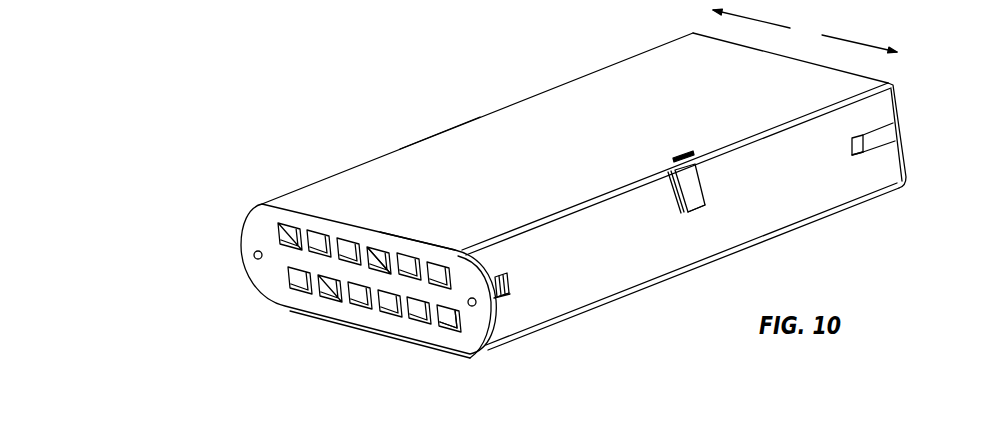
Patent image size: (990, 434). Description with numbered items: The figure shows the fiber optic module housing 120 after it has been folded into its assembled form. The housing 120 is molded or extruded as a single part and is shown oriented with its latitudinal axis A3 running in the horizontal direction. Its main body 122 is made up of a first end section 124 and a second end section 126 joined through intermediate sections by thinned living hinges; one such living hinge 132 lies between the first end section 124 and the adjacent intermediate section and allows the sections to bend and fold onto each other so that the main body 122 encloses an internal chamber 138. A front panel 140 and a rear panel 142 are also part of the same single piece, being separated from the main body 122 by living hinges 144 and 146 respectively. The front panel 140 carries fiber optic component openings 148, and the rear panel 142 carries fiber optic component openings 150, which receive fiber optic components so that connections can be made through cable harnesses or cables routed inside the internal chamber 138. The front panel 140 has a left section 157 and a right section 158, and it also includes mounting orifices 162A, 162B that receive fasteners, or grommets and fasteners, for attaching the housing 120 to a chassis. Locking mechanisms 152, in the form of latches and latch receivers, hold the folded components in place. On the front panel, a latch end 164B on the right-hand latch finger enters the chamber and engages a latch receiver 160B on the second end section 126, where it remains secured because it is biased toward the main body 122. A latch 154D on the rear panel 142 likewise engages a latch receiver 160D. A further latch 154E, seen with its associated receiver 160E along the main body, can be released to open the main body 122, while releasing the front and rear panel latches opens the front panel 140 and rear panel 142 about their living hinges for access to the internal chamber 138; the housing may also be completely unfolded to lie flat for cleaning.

The fiber optic module housing 120 is at (386, 114).
The main body 122 is at (539, 96).
The first end section 124 is at (562, 186).
The second end section 126 is at (599, 257).
The living hinge 132 is at (437, 137).
The internal chamber 138 is at (447, 331).
The front panel 140 is at (326, 278).
The rear panel 142 is at (903, 121).
The living hinge 144 is at (400, 240).
The living hinge 146 is at (773, 55).
The fiber optic component openings 148 is at (378, 257).
The fiber optic component openings 150 is at (346, 309).
The locking mechanisms 152 is at (729, 232).
The latch 154D is at (885, 135).
The latch 154E is at (695, 181).
The left section of the front panel 157 is at (270, 306).
The right section of the front panel 158 is at (480, 340).
The latch receiver 160B is at (512, 297).
The latch receiver 160D is at (878, 149).
The latch tab 160E is at (681, 200).
The mounting orifice 162A is at (253, 253).
The mounting orifice 162B is at (472, 306).
The latch end 164B is at (509, 283).
The latitudinal axis A3 is at (805, 31).